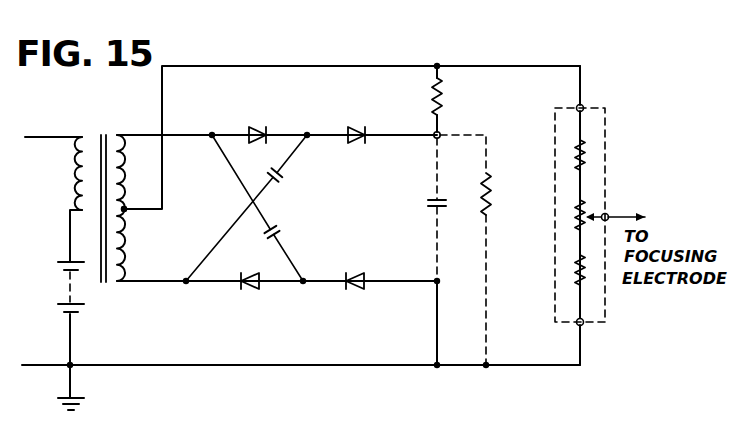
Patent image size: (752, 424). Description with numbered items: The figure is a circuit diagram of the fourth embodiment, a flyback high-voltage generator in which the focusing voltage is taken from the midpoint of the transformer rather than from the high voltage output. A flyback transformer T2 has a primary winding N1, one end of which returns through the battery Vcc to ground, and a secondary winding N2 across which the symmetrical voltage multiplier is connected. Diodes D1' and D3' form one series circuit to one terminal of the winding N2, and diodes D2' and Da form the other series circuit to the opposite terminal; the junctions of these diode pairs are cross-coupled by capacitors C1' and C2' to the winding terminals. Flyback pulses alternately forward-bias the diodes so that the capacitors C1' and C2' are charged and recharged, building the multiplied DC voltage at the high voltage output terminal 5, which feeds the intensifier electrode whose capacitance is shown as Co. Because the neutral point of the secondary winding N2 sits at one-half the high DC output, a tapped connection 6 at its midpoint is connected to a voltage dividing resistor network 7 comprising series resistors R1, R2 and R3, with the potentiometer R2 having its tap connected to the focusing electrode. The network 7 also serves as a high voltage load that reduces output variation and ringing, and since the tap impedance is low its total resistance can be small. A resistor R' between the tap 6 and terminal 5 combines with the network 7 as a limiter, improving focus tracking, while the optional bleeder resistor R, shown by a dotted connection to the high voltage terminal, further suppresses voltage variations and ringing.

The flyback transformer T2 is at (98, 132).
The primary winding N1 is at (74, 183).
The secondary winding N2 is at (126, 242).
The tapped connection 6 is at (128, 207).
The battery Vcc is at (66, 272).
The diode D1' is at (252, 299).
The diode D2' is at (264, 118).
The diode D3' is at (359, 118).
The diode Da is at (355, 292).
The capacitor C1' is at (298, 178).
The capacitor C2' is at (295, 230).
The resistor R' is at (455, 96).
The high voltage output terminal 5 is at (429, 142).
The capacitance Co is at (432, 204).
The bleeder resistor R is at (475, 250).
The voltage dividing resistor network 7 is at (608, 136).
The resistor R1 is at (576, 155).
The potentiometer R2 is at (576, 212).
The resistor R3 is at (576, 268).